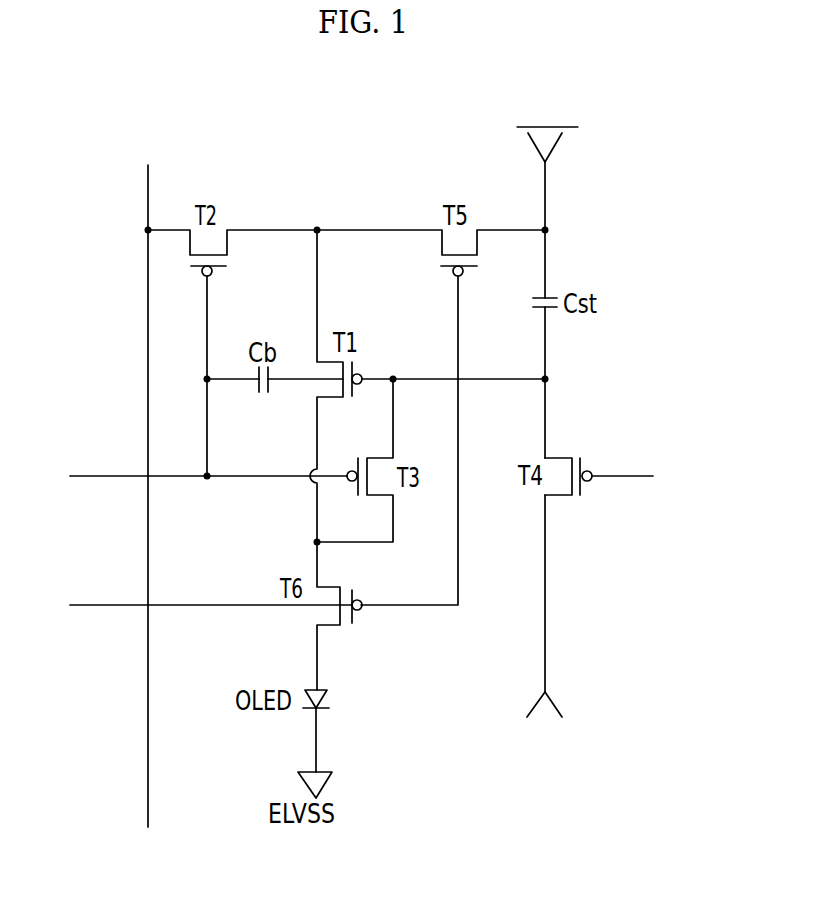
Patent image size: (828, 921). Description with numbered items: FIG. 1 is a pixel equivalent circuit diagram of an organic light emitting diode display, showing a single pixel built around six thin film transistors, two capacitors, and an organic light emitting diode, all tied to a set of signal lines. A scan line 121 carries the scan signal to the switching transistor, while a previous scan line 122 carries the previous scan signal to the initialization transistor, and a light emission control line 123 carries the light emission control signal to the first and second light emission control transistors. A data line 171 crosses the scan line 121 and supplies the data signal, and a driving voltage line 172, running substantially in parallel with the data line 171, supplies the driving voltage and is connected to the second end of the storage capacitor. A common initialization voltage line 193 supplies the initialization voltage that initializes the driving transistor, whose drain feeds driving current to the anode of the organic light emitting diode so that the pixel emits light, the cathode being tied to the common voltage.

The data line 171 is at (148, 190).
The driving voltage line 172 is at (546, 195).
The scan line 121 is at (86, 476).
The previous scan line 122 is at (628, 478).
The light emission control line 123 is at (103, 606).
The common initialization voltage line 193 is at (546, 655).